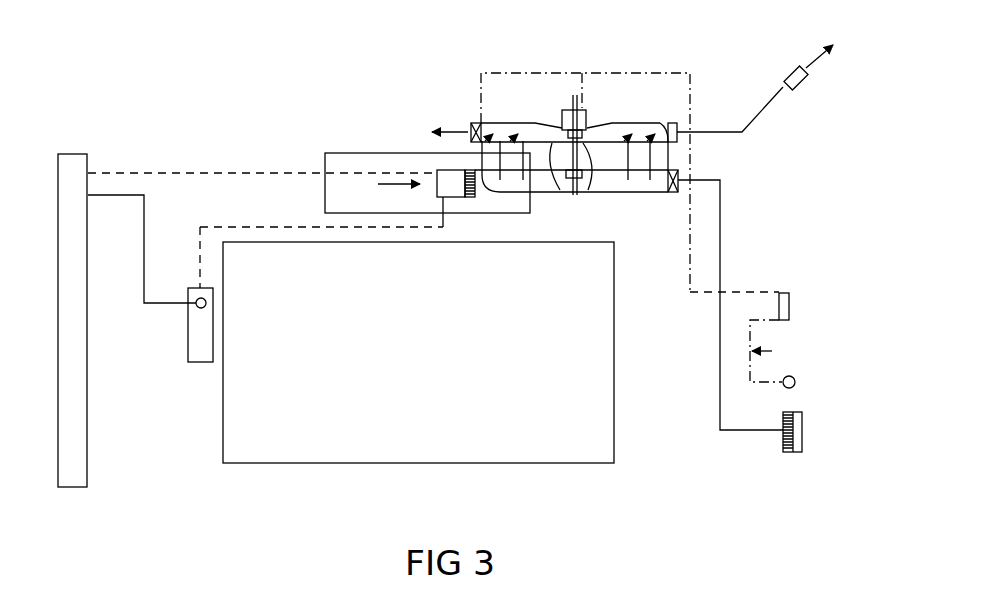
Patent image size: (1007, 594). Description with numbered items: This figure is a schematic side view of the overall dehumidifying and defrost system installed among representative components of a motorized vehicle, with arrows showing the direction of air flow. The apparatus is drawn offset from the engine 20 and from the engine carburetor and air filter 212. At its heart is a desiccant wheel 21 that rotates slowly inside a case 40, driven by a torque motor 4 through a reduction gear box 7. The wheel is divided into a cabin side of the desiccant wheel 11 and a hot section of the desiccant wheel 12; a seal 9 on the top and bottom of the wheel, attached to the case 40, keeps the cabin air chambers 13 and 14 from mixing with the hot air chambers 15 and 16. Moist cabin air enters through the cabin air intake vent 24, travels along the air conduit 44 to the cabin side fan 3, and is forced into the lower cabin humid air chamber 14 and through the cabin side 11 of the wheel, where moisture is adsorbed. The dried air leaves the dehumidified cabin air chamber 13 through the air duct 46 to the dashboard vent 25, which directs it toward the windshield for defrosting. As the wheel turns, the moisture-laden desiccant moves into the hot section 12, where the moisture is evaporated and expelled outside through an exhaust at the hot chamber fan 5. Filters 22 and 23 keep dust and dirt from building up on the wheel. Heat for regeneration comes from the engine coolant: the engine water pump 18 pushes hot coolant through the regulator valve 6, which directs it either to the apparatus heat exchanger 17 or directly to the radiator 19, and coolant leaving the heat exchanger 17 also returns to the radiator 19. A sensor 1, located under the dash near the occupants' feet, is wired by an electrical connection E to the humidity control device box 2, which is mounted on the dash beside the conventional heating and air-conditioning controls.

The sensor 1 is at (795, 377).
The humidity control device box 2 is at (790, 307).
The cabin side fan 3 is at (672, 192).
The torque motor 4 is at (566, 110).
The hot chamber fan 5 is at (471, 128).
The regulator valve 6 is at (197, 308).
The reduction gear box 7 is at (580, 113).
The seal 9 is at (586, 180).
The cabin side of the desiccant wheel 11 is at (627, 143).
The hot section of the desiccant wheel 12 is at (523, 143).
The dehumidified cabin air chamber 13 is at (657, 127).
The cabin humid air chamber 14 is at (613, 143).
The hot air chamber 15 is at (503, 128).
The hot air chamber 16 is at (549, 150).
The heat exchanger 17 is at (437, 172).
The engine water pump 18 is at (197, 362).
The radiator 19 is at (72, 154).
The engine 20 is at (248, 464).
The desiccant wheel 21 is at (610, 140).
The filter 22 is at (470, 197).
The filter 23 is at (788, 452).
The cabin air intake vent 24 is at (798, 433).
The dashboard vent 25 is at (800, 90).
The case 40 is at (622, 173).
The air conduit 44 is at (722, 240).
The air duct 46 is at (755, 118).
The engine carburetor and air filter 212 is at (325, 160).
The electrical connection E is at (770, 350).